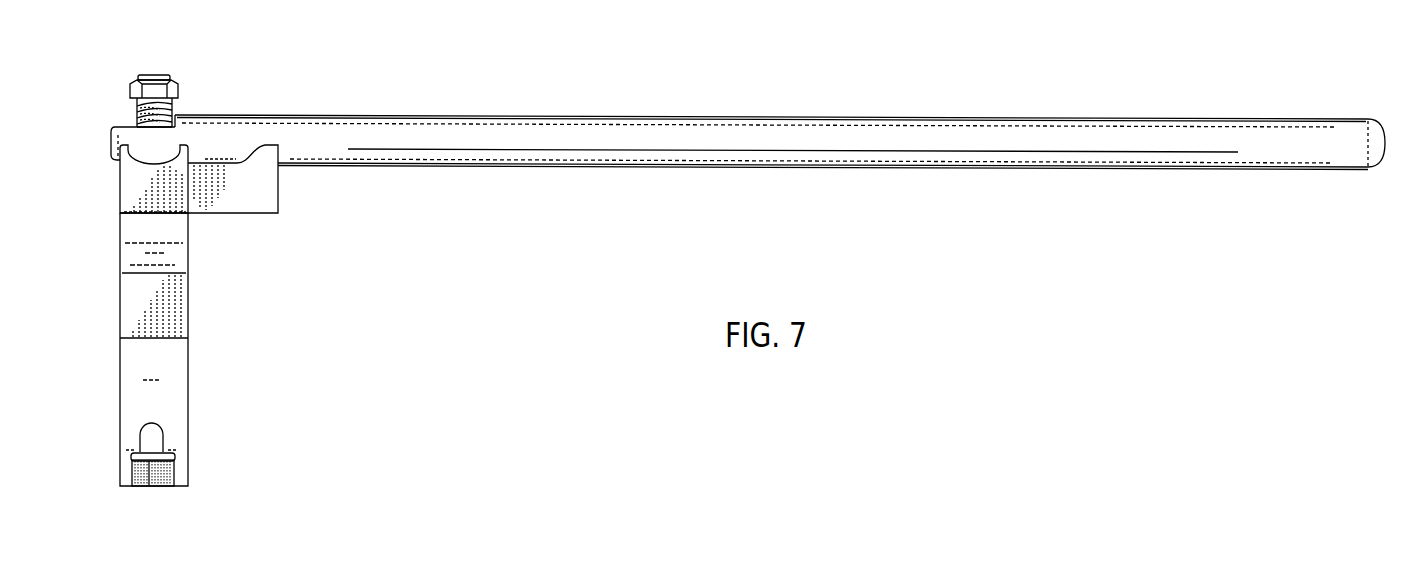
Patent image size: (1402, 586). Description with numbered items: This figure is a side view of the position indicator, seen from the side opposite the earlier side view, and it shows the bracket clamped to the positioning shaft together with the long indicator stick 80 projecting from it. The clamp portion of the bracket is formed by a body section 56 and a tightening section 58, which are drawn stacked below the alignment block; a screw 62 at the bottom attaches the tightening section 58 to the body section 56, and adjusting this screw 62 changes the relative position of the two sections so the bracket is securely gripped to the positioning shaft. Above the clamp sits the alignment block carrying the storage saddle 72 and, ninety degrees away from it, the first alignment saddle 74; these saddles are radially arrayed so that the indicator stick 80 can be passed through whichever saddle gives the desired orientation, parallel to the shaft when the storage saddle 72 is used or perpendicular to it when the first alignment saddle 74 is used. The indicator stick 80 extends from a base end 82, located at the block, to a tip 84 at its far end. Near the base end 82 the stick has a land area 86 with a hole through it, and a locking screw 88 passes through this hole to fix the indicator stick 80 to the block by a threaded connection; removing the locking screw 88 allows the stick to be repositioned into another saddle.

The body section 56 is at (180, 302).
The tightening section 58 is at (177, 384).
The screw 62 is at (147, 490).
The storage saddle 72 is at (267, 190).
The first alignment saddle 74 is at (132, 184).
The indicator stick 80 is at (932, 185).
The base end 82 is at (117, 127).
The tip 84 is at (1385, 139).
The land area 86 is at (170, 113).
The locking screw 88 is at (163, 80).